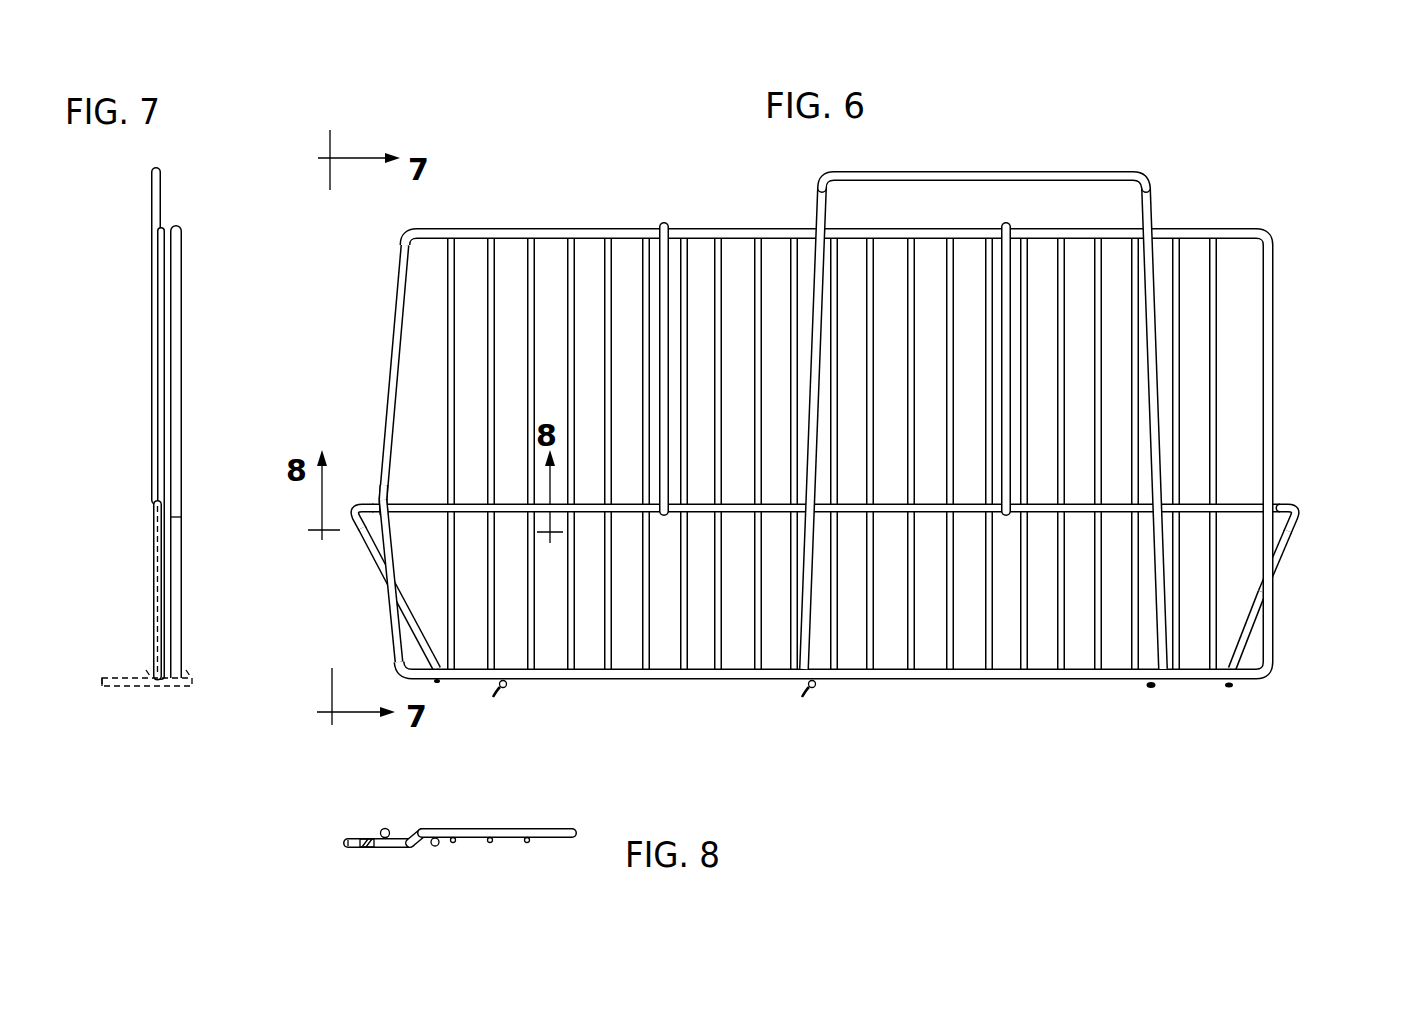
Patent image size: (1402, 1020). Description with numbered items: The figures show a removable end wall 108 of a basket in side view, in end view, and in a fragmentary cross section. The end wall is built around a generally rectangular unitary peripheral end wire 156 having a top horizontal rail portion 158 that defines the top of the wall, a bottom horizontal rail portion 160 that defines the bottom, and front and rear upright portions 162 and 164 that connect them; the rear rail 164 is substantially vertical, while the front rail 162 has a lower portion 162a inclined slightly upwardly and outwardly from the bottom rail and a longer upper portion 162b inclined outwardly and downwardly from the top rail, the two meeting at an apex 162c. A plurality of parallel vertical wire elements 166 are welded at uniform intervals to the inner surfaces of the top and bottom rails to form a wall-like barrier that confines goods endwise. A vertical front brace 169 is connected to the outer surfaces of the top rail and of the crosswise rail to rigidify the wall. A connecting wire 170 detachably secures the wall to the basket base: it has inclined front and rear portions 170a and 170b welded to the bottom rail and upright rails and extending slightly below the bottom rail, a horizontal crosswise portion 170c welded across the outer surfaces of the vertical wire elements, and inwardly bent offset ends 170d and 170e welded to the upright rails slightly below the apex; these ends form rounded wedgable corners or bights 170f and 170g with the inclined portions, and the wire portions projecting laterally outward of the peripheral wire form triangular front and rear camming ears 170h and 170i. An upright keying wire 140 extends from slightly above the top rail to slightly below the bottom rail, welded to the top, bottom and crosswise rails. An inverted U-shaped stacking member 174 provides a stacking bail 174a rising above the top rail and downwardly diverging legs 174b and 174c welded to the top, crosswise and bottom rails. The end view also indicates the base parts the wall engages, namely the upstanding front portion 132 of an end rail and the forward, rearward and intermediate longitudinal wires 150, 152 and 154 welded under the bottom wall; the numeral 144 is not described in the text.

In FIG. 6, the removable end wall 108 is at (385, 250).
In FIG. 7, the upstanding front portion 132 is at (190, 675).
In FIG. 6, the upright keying wire 140 is at (1010, 222).
In FIG. 7, the upright keying wire 140 is at (184, 545).
In FIG. 7, the base channel 144 is at (147, 668).
In FIG. 6, the forward longitudinal wire 150 is at (505, 692).
In FIG. 7, the forward longitudinal wire 150 is at (118, 690).
In FIG. 6, the rearward longitudinal wire 152 is at (1152, 690).
In FIG. 6, the intermediate longitudinal wire 154 is at (812, 692).
In FIG. 6, the peripheral end wire 156 is at (819, 451).
In FIG. 6, the top horizontal rail portion 158 is at (516, 228).
In FIG. 6, the bottom horizontal rail portion 160 is at (926, 681).
In FIG. 6, the front upright portion 162 is at (374, 453).
In FIG. 7, the front upright portion 162 is at (167, 228).
In FIG. 6, the lower portion of front rail 162a is at (394, 620).
In FIG. 8, the lower portion of front rail 162a is at (386, 828).
In FIG. 6, the upper portion of front rail 162b is at (396, 320).
In FIG. 6, the apex 162c is at (380, 490).
In FIG. 6, the rear upright portion 164 is at (1274, 350).
In FIG. 6, the vertical wire elements 166 is at (536, 262).
In FIG. 8, the vertical wire elements 166 is at (528, 846).
In FIG. 6, the vertical front brace 169 is at (660, 222).
In FIG. 7, the vertical front brace 169 is at (184, 305).
In FIG. 6, the connecting wire 170 is at (832, 568).
In FIG. 8, the connecting wire 170 is at (441, 833).
In FIG. 6, the inclined front portion 170a is at (415, 648).
In FIG. 6, the inclined rear portion 170b is at (1250, 656).
In FIG. 6, the horizontal crosswise portion 170c is at (745, 514).
In FIG. 8, the horizontal crosswise portion 170c is at (518, 828).
In FIG. 6, the offset end 170d is at (436, 508).
In FIG. 8, the offset end 170d is at (420, 850).
In FIG. 6, the offset end 170e is at (1238, 512).
In FIG. 6, the rounded wedgable corner 170f is at (354, 506).
In FIG. 7, the rounded wedgable corner 170f is at (153, 505).
In FIG. 8, the rounded wedgable corner 170f is at (348, 843).
In FIG. 6, the rounded wedgable corner 170g is at (1300, 520).
In FIG. 6, the front wedgable camming ear 170h is at (360, 545).
In FIG. 8, the front wedgable camming ear 170h is at (362, 850).
In FIG. 6, the rear wedgable camming ear 170i is at (1302, 548).
In FIG. 6, the inverted U-shaped stacking member 174 is at (1001, 391).
In FIG. 6, the stacking bail 174a is at (986, 170).
In FIG. 7, the stacking bail 174a is at (150, 180).
In FIG. 6, the leg of stacking member 174b is at (820, 186).
In FIG. 6, the leg of stacking member 174c is at (1156, 214).